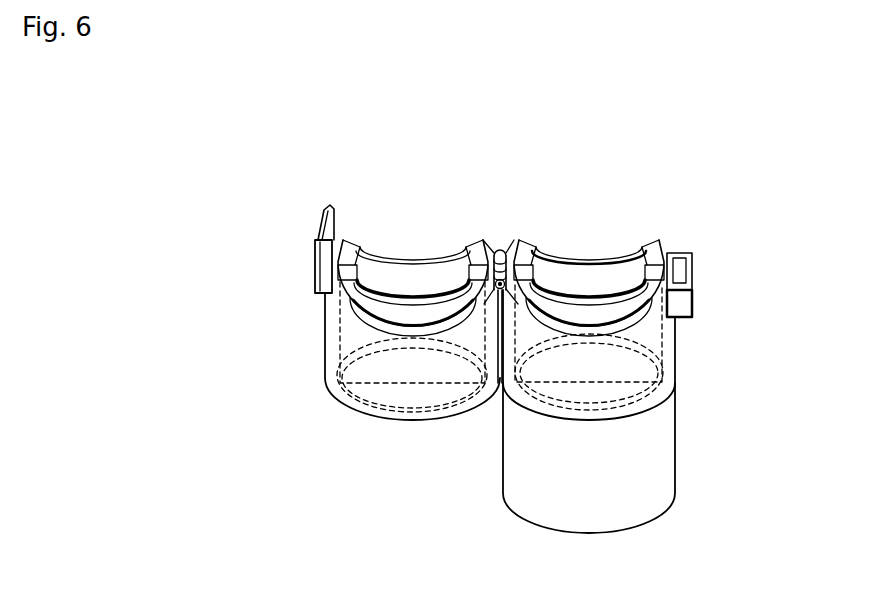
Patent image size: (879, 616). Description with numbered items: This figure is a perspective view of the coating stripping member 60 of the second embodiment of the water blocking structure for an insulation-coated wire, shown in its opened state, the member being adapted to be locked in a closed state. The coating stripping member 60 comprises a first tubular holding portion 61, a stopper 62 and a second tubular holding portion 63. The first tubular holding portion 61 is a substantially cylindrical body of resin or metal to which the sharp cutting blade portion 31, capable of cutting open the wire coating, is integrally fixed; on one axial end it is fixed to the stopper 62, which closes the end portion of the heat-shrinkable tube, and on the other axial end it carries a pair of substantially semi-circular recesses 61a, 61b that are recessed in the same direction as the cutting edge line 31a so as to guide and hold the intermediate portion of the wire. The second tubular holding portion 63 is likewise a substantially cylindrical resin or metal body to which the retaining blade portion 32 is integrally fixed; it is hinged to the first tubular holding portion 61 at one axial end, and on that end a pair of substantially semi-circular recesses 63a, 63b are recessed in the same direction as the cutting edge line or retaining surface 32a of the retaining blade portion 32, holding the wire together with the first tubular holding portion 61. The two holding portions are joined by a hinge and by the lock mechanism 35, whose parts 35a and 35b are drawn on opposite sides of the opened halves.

The coating stripping member 60 is at (488, 185).
The first tubular holding portion 61 is at (692, 333).
The semi-circular recess 61a is at (618, 256).
The semi-circular recess 61b is at (622, 305).
The stopper 62 is at (662, 457).
The second tubular holding portion 63 is at (311, 373).
The semi-circular recess 63a is at (433, 262).
The semi-circular recess 63b is at (402, 320).
The cutting blade portion 31 is at (645, 245).
The cutting edge line 31a is at (587, 297).
The retaining blade portion 32 is at (375, 278).
The retaining surface 32a is at (425, 287).
The lock mechanism 35 is at (304, 278).
The latch hook 35a is at (318, 238).
The latch catch 35b is at (693, 264).